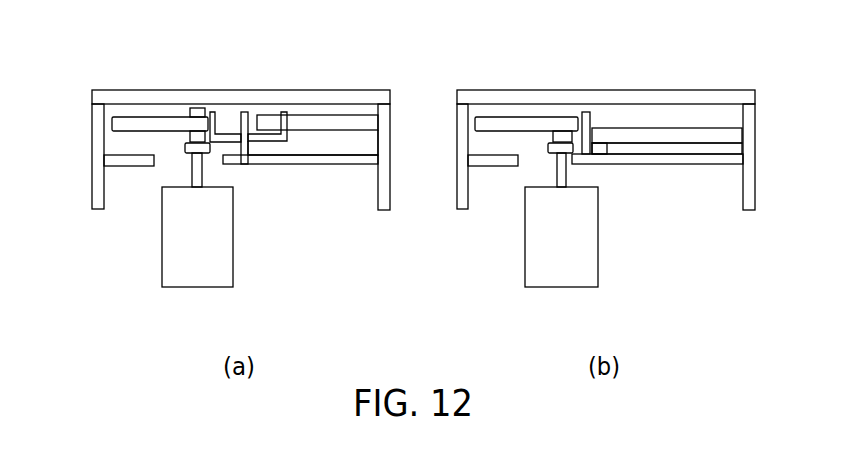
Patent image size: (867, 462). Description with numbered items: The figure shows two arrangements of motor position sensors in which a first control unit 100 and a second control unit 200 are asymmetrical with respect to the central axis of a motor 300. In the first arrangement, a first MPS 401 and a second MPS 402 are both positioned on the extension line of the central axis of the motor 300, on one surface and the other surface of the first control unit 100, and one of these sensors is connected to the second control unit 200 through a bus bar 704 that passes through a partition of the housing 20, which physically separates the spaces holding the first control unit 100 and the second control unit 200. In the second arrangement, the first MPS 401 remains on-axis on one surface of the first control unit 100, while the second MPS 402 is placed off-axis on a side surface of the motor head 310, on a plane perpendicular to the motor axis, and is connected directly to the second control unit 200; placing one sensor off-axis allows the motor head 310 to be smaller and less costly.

The housing 20 is at (245, 112).
The first control unit 100 is at (125, 119).
The second control unit 200 is at (320, 122).
The motor 300 is at (165, 257).
The motor head 310 is at (183, 146).
The first MPS 401 is at (196, 108).
The second MPS 402 is at (188, 135).
The bus bar 704 is at (232, 158).